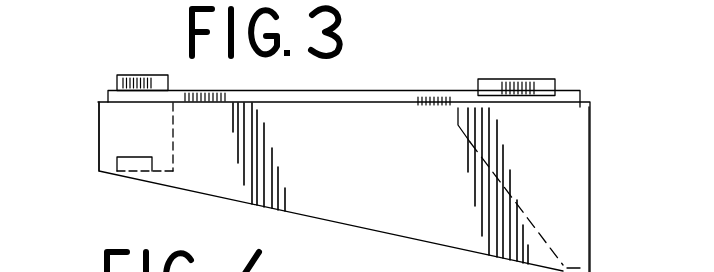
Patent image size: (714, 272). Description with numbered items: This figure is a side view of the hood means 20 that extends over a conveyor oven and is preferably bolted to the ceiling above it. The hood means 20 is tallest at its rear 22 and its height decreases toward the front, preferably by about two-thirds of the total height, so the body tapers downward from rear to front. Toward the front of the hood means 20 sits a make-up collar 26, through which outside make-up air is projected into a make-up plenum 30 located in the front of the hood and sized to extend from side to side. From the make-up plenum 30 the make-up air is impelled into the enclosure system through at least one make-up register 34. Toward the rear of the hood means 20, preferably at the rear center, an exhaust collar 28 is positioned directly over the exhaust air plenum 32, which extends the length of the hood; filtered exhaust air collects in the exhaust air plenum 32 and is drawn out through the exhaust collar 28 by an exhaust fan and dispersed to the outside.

The hood means 20 is at (350, 93).
The rear of the hood means 22 is at (590, 267).
The make-up collar 26 is at (117, 78).
The exhaust collar 28 is at (540, 79).
The make-up plenum 30 is at (115, 122).
The exhaust air plenum 32 is at (580, 167).
The make-up register 34 is at (108, 163).